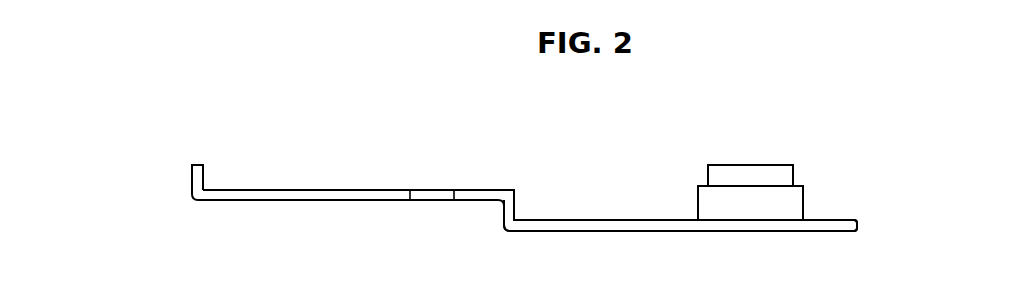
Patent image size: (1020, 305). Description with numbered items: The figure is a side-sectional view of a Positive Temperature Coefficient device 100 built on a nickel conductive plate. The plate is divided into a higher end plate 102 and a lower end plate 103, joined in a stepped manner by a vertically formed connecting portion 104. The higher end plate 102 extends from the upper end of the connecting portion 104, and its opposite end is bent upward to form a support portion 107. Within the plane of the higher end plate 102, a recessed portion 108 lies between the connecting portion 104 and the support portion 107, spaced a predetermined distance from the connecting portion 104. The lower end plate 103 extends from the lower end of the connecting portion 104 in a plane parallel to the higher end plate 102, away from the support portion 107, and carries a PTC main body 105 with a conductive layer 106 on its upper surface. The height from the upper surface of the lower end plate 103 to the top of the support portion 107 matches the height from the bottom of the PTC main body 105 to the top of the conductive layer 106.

The PTC device 100 is at (155, 112).
The higher end plate 102 is at (302, 193).
The lower end plate 103 is at (596, 232).
The connecting portion 104 is at (509, 212).
The PTC main body 105 is at (730, 210).
The conductive layer 106 is at (772, 182).
The support portion 107 is at (193, 186).
The recessed portion 108 is at (427, 195).